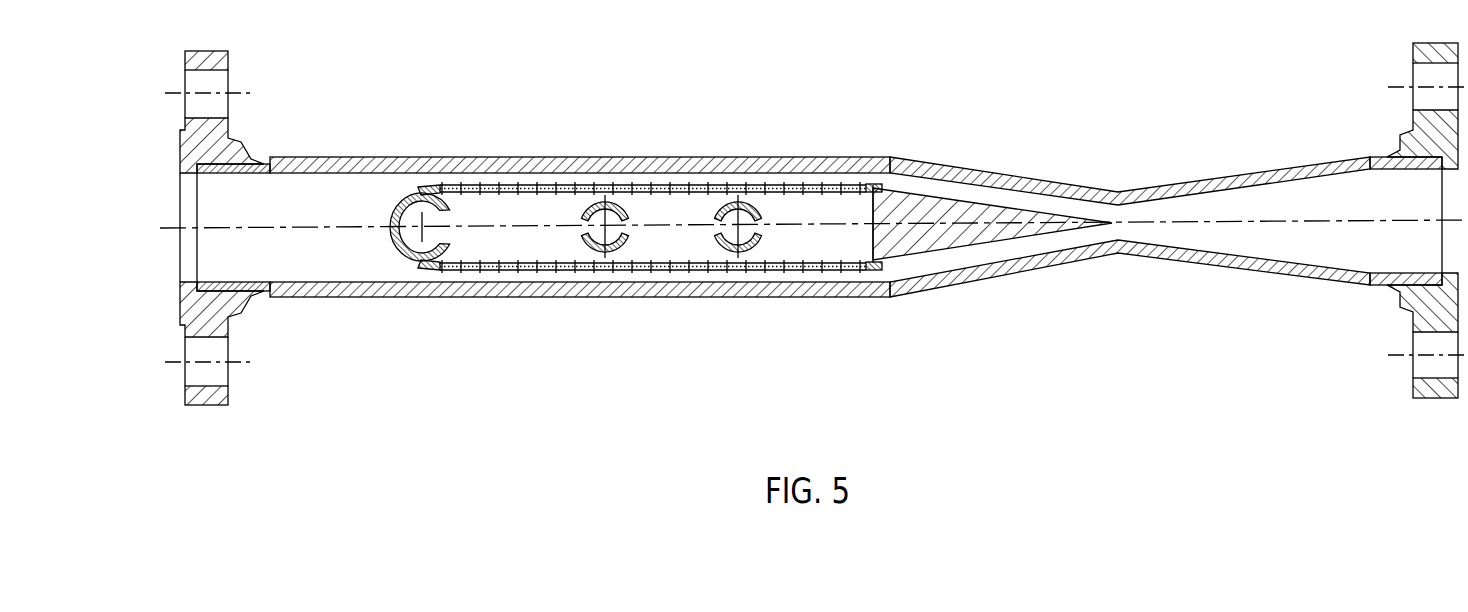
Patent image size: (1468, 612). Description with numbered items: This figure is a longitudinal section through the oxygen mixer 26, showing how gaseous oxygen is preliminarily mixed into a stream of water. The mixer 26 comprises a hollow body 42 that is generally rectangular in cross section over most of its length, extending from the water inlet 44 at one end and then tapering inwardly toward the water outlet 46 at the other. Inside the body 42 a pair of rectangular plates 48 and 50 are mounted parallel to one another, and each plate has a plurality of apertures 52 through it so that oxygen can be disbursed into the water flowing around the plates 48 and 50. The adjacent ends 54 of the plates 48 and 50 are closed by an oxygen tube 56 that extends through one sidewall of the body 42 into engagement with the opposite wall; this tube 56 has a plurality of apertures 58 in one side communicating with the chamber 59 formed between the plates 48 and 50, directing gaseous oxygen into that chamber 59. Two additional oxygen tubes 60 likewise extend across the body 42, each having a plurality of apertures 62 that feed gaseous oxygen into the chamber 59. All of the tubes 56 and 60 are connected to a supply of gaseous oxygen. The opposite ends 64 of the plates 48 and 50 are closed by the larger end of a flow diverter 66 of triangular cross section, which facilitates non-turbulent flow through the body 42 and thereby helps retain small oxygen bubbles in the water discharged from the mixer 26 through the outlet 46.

The oxygen mixer 26 is at (947, 173).
The hollow body 42 is at (480, 297).
The water inlet 44 is at (257, 158).
The water outlet 46 is at (1383, 156).
The rectangular plate 48 is at (757, 183).
The rectangular plate 50 is at (767, 270).
The apertures 52 is at (730, 183).
The adjacent ends 54 is at (423, 190).
The oxygen tube 56 is at (398, 212).
The apertures 58 is at (455, 228).
The chamber 59 is at (621, 226).
The additional oxygen tubes 60 is at (581, 214).
The apertures 62 is at (580, 232).
The opposite ends 64 is at (876, 186).
The flow diverter 66 is at (958, 237).